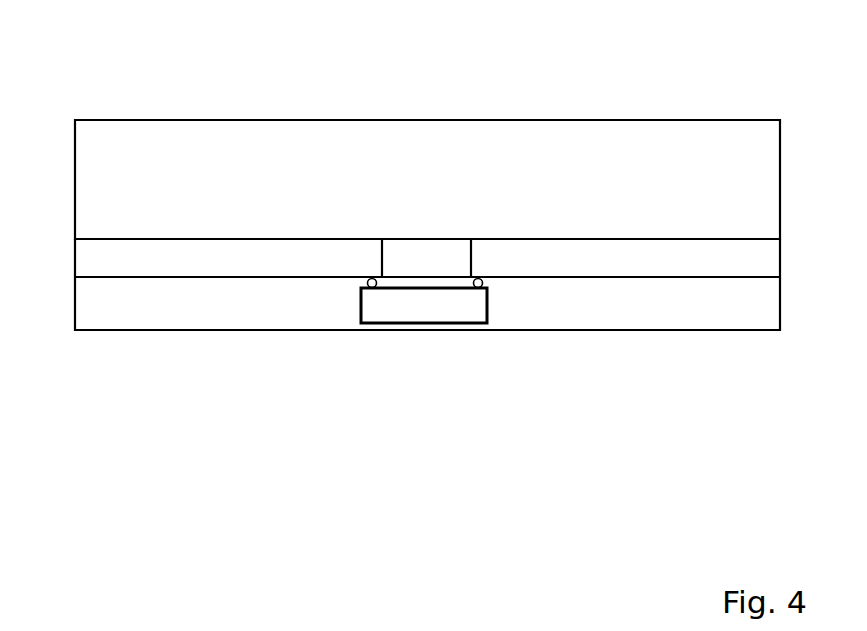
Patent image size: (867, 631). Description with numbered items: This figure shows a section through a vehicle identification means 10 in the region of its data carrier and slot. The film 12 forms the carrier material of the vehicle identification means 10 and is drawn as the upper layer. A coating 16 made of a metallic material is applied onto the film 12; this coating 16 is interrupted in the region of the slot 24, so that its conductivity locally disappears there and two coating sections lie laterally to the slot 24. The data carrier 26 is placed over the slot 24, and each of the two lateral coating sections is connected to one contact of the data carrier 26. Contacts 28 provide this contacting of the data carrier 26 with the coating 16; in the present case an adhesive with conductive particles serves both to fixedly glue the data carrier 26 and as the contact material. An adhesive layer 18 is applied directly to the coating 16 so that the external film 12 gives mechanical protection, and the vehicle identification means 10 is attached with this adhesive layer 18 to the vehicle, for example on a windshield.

The vehicle identification means 10 is at (95, 385).
The film 12 is at (181, 182).
The coating 16 is at (550, 248).
The adhesive layer 18 is at (240, 318).
The slot 24 is at (460, 250).
The data carrier 26 is at (465, 313).
The contacts 28 is at (470, 290).